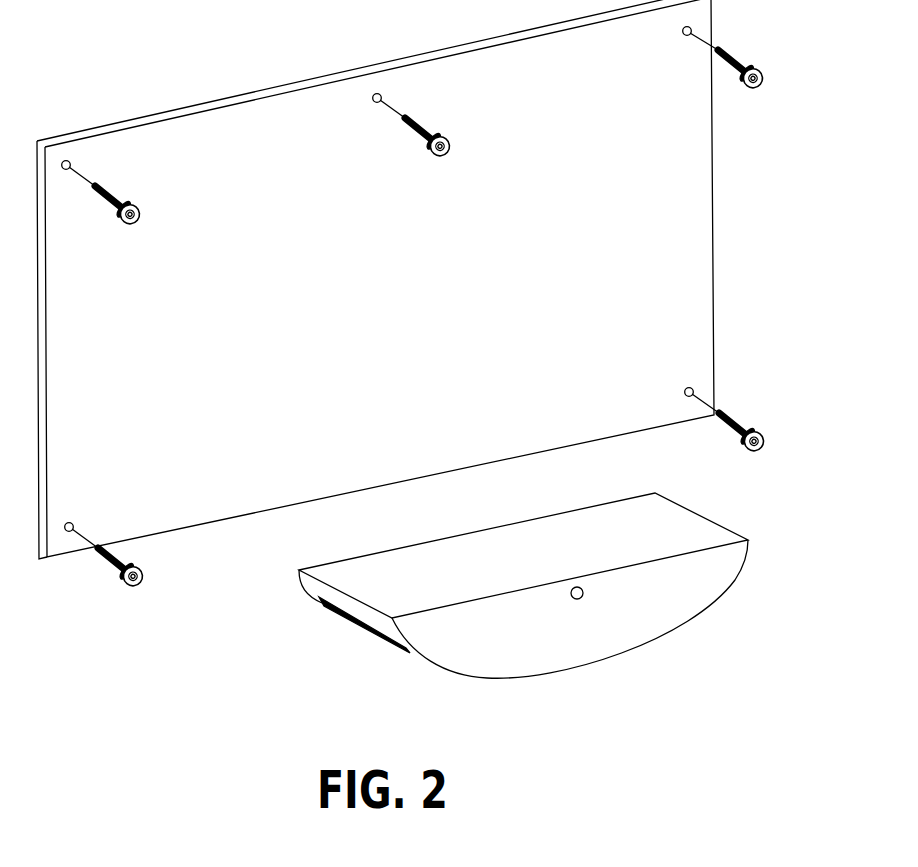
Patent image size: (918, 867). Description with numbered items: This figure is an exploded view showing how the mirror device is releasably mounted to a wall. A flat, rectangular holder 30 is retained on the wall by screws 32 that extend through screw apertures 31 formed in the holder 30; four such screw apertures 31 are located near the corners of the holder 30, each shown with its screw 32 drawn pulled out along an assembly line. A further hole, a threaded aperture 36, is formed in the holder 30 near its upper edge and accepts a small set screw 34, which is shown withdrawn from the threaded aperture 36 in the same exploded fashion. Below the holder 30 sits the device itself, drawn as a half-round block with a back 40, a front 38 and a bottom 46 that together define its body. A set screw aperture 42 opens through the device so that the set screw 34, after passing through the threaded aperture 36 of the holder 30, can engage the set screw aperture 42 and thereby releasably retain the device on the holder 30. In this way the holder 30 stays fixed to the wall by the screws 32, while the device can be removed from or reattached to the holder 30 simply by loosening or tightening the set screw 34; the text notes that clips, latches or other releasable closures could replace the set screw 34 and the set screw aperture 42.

The holder 30 is at (713, 200).
The screw apertures 31 is at (68, 160).
The screws 32 is at (738, 59).
The set screw 34 is at (428, 126).
The threaded aperture 36 is at (377, 93).
The front 38 is at (318, 590).
The back 40 is at (680, 517).
The set screw aperture 42 is at (578, 600).
The bottom 46 is at (707, 578).